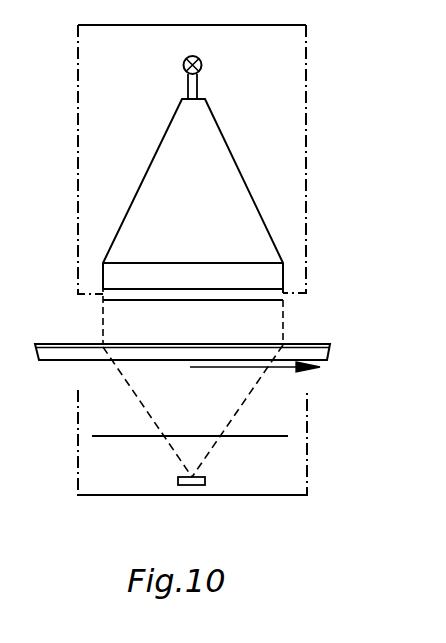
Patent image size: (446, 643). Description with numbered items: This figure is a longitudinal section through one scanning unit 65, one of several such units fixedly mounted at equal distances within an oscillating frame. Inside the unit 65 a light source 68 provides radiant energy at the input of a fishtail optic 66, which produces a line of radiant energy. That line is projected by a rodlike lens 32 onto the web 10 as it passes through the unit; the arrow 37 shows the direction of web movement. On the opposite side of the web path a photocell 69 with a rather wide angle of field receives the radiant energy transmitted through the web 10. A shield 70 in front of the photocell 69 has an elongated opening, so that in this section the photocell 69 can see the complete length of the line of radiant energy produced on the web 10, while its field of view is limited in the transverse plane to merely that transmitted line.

The web 10 is at (50, 353).
The rodlike lens 32 is at (262, 294).
The arrow 37 is at (285, 371).
The unit 65 is at (285, 123).
The fishtail optic 66 is at (232, 194).
The light source 68 is at (202, 63).
The photocell 69 is at (178, 485).
The shield 70 is at (92, 436).